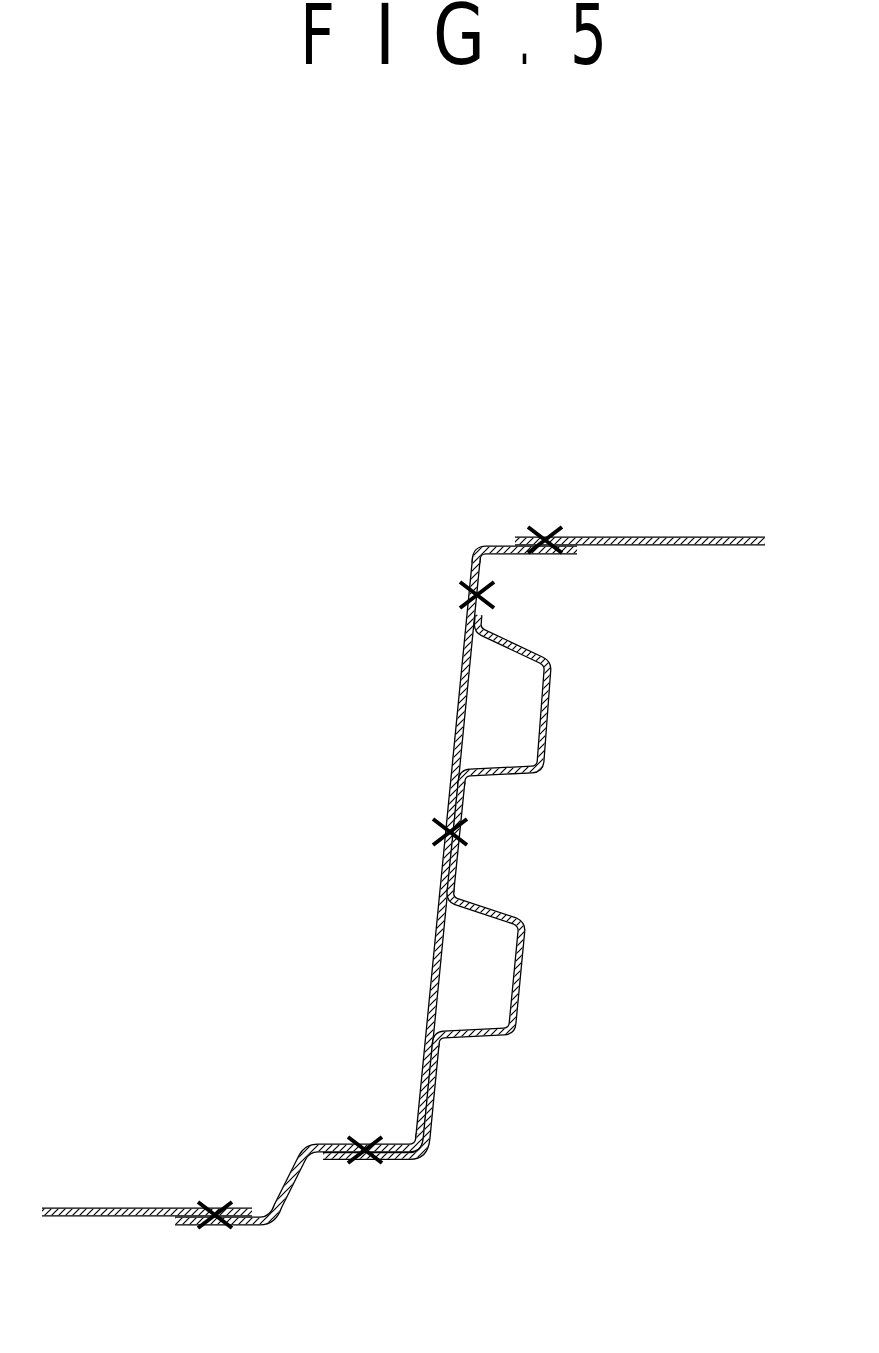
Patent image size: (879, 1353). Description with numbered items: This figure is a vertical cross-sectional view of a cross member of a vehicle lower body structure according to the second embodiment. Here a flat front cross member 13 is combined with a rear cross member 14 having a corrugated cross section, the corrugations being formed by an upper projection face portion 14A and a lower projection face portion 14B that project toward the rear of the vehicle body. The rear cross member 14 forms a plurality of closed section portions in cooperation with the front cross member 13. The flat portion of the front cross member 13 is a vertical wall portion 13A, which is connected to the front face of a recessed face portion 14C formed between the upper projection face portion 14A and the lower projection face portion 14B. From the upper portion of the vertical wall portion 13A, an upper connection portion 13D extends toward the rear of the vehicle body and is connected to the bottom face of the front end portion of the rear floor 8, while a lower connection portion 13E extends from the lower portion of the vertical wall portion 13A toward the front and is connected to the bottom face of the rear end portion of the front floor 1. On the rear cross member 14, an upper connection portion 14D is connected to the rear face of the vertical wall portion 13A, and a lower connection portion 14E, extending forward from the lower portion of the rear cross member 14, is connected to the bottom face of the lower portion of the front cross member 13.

The front floor 1 is at (82, 1207).
The rear floor 8 is at (697, 537).
The front cross member 13 is at (376, 874).
The vertical wall portion 13A is at (432, 952).
The upper connection portion 13D is at (500, 540).
The lower connection portion 13E is at (238, 1226).
The rear cross member 14 is at (515, 913).
The upper projection face portion 14A is at (557, 723).
The lower projection face portion 14B is at (532, 975).
The recessed face portion 14C is at (455, 863).
The upper connection portion 14D is at (485, 573).
The lower connection portion 14E is at (390, 1160).